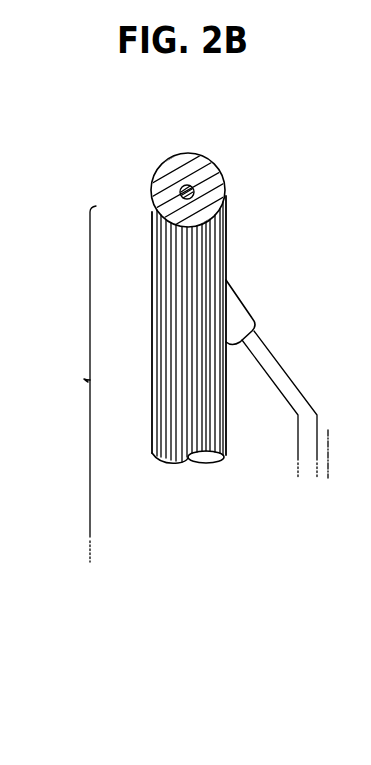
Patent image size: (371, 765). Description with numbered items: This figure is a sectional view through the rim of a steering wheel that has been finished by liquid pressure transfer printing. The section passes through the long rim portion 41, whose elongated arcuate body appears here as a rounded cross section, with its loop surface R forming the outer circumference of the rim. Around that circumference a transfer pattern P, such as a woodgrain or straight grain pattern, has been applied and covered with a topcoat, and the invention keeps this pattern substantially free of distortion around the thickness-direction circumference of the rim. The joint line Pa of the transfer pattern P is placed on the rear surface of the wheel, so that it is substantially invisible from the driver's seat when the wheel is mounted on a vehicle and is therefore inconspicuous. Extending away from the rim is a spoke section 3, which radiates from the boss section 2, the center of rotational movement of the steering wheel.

The long rim portion 41 is at (48, 384).
The loop surface R is at (148, 237).
The transfer pattern P is at (175, 328).
The joint line Pa is at (212, 268).
The spoke section 3 is at (258, 348).
The boss section 2 is at (333, 427).